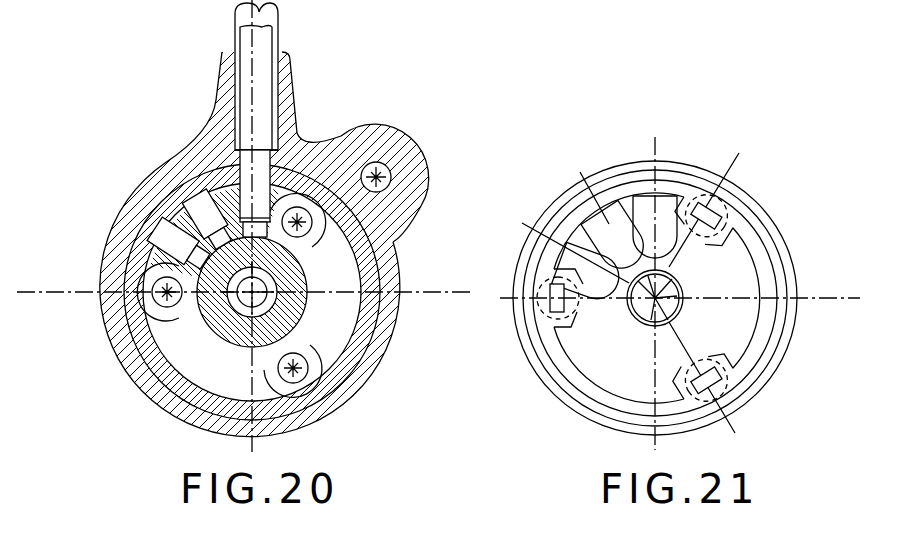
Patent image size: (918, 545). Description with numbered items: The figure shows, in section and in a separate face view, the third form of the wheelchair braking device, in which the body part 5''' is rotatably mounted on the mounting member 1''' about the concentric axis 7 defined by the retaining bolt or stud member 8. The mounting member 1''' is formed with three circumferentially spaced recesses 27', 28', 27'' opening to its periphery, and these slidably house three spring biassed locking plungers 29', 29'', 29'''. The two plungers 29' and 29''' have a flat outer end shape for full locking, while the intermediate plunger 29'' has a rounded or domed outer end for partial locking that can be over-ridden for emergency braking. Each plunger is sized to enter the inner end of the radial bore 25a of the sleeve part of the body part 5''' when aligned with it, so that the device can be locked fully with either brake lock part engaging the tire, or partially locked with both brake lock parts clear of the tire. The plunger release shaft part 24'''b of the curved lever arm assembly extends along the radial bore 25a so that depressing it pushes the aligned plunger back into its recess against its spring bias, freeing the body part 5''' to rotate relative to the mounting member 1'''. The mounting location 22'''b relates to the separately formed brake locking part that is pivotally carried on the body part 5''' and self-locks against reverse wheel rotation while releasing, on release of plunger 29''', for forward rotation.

In FIG. 20, the radial bore 25a is at (215, 100).
In FIG. 20, the plunger release shaft part 24'''b is at (311, 76).
In FIG. 20, the third recess 27'' is at (317, 158).
In FIG. 20, the brake locking part mounting 22'''b is at (433, 177).
In FIG. 20, the fully locking plunger 29''' is at (149, 128).
In FIG. 20, the partial locking plunger 29'' is at (137, 163).
In FIG. 20, the second recess 28' is at (142, 220).
In FIG. 20, the fully locking plunger 29' is at (129, 245).
In FIG. 20, the first recess 27' is at (95, 295).
In FIG. 20, the body part 5''' is at (280, 244).
In FIG. 20, the concentric axis 7 is at (277, 295).
In FIG. 21, the concentric axis 7 is at (660, 297).
In FIG. 20, the retaining bolt or stud member 8 is at (213, 330).
In FIG. 21, the mounting member 1''' is at (655, 249).